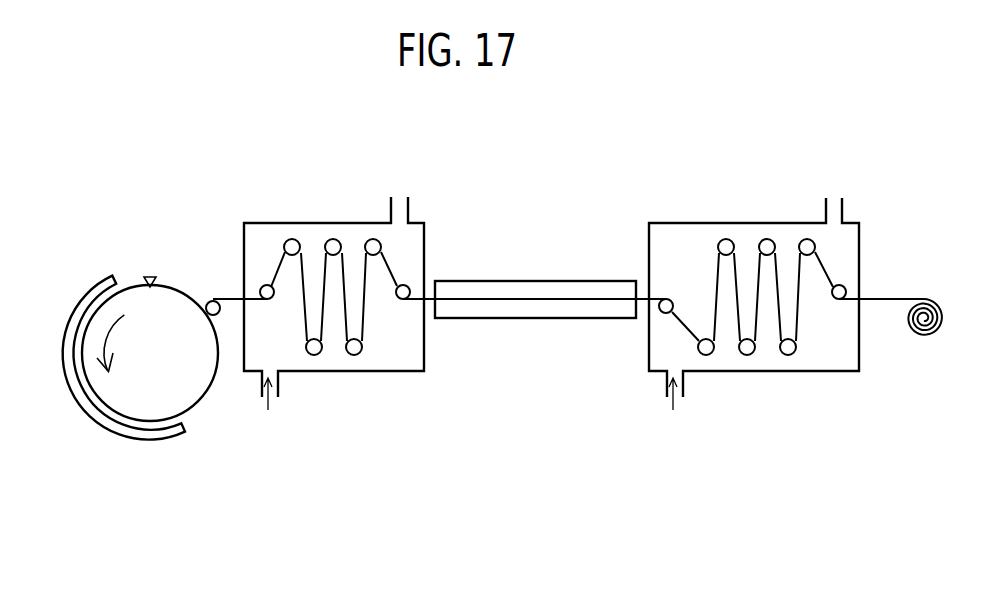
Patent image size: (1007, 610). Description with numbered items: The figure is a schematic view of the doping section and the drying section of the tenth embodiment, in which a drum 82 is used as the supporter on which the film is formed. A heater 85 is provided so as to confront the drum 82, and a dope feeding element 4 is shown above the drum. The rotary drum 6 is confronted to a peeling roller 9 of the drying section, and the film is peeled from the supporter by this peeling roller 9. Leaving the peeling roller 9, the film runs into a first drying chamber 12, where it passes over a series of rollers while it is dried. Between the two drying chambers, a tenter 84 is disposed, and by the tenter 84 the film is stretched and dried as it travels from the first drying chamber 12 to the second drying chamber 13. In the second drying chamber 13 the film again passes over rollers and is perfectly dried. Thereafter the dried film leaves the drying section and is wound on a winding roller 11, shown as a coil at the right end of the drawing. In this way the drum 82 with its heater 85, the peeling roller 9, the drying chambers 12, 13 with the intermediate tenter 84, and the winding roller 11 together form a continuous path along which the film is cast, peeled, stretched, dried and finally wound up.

The coating head 4 is at (150, 277).
The rotary drum 6 is at (177, 287).
The peeling roller 9 is at (207, 301).
The winding roller 11 is at (925, 338).
The drying chamber 12 is at (298, 223).
The drying chamber 13 is at (707, 223).
The drum 82 is at (202, 400).
The tenter 84 is at (496, 281).
The heater 85 is at (132, 437).